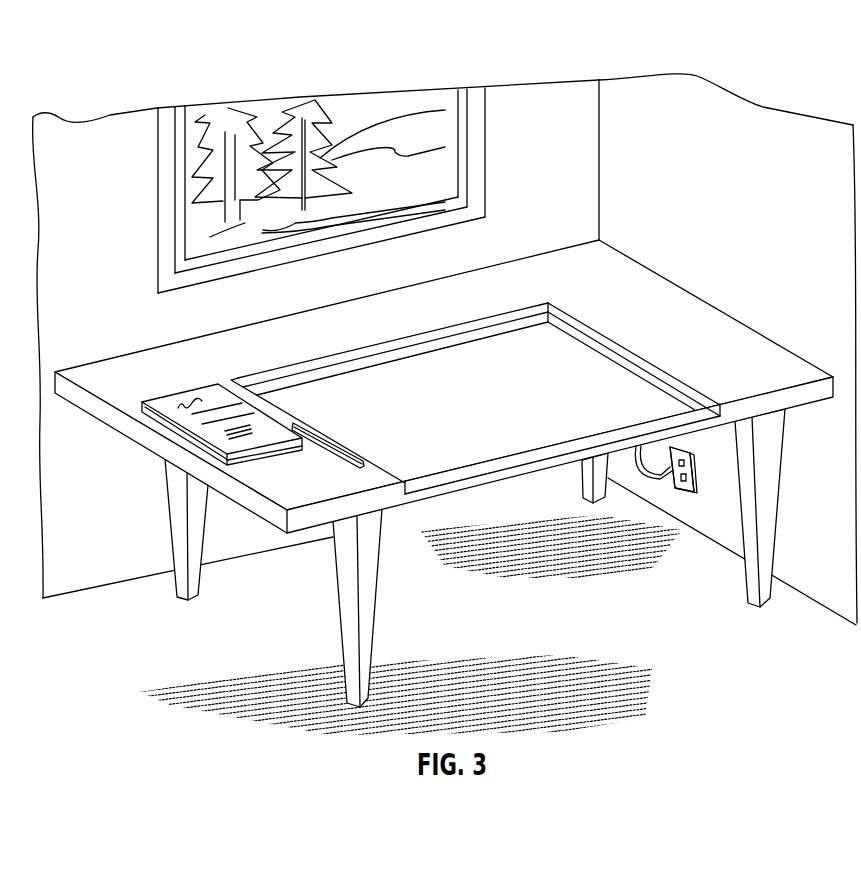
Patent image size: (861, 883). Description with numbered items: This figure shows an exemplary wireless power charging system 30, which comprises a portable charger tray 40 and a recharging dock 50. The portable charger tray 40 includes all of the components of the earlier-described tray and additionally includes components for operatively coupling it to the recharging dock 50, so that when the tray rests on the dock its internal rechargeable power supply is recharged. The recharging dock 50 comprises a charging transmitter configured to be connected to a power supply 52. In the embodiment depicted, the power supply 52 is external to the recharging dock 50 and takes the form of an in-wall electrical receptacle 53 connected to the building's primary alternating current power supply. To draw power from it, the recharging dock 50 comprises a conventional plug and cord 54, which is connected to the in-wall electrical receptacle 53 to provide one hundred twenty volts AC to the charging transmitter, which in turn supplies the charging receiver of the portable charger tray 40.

The wireless power charging system 30 is at (694, 49).
The portable charger tray 40 is at (580, 376).
The recharging dock 50 is at (374, 478).
The power supply 52 is at (693, 493).
The in-wall electrical receptacle 53 is at (693, 493).
The plug and cord 54 is at (666, 480).